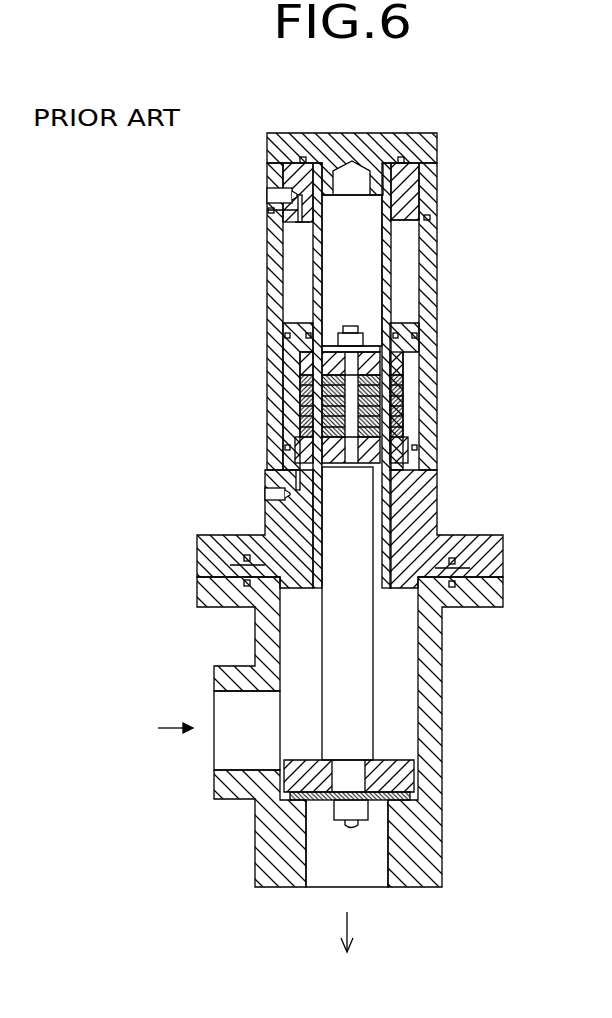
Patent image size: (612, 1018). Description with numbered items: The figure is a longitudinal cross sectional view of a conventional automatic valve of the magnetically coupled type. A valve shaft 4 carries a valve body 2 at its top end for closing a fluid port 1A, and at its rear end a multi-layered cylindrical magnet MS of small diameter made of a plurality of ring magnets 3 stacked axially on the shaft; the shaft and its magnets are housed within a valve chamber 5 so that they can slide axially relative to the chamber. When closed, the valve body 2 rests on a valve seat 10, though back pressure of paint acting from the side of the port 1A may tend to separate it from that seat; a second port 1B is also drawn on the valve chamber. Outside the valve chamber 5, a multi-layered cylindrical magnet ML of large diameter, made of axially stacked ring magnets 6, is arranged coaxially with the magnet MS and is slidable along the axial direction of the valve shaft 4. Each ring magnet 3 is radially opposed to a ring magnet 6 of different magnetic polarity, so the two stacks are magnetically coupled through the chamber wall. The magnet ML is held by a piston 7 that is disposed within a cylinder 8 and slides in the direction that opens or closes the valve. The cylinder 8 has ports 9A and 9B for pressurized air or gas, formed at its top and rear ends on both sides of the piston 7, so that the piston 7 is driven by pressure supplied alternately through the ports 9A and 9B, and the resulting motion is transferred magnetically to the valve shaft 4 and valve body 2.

The fluid port 1A is at (326, 874).
The inlet port 1B is at (224, 702).
The valve body 2 is at (405, 775).
The ring magnets 3 is at (380, 384).
The valve shaft 4 is at (362, 507).
The valve chamber 5 is at (405, 663).
The ring magnets 6 is at (306, 377).
The piston 7 is at (282, 343).
The cylinder 8 is at (270, 258).
The port 9A is at (280, 197).
The port 9B is at (282, 494).
The valve seat 10 is at (405, 811).
The multi-layered cylindrical magnet of large diameter ML is at (213, 353).
The multi-layered cylindrical magnet of small diameter MS is at (491, 353).